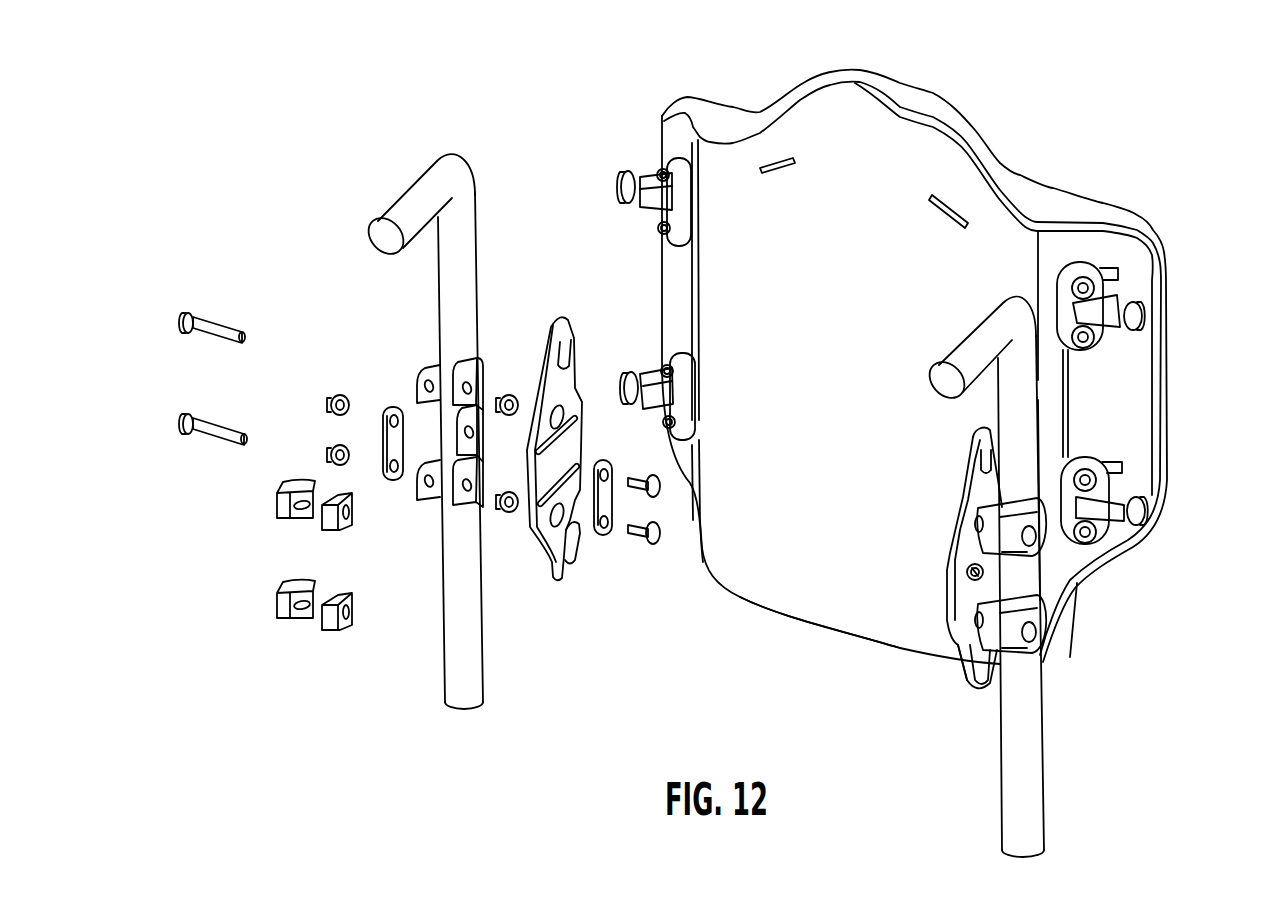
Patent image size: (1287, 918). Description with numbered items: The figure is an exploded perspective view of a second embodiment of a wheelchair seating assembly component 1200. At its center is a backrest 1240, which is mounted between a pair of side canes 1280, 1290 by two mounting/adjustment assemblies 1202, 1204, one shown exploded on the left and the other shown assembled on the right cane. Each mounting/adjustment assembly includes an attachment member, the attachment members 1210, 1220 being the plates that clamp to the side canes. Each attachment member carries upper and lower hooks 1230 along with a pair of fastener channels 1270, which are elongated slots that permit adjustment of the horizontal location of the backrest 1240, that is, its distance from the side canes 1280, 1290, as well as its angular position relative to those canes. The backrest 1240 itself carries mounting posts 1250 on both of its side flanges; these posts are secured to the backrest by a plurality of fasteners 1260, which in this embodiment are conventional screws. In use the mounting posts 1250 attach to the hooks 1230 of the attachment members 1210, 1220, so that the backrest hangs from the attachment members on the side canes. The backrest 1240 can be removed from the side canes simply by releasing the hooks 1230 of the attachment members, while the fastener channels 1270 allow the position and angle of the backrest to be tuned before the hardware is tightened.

The wheelchair seating assembly component 1200 is at (1002, 145).
The mounting/adjustment assembly 1202 is at (332, 328).
The mounting/adjustment assembly 1204 is at (930, 516).
The attachment member 1210 is at (563, 580).
The attachment member 1220 is at (965, 668).
The upper and lower hooks 1230 is at (570, 327).
The backrest 1240 is at (792, 603).
The mounting posts 1250 is at (623, 178).
The fasteners 1260 is at (658, 172).
The fastener channels 1270 is at (573, 438).
The side cane 1280 is at (415, 182).
The side cane 1290 is at (1035, 748).